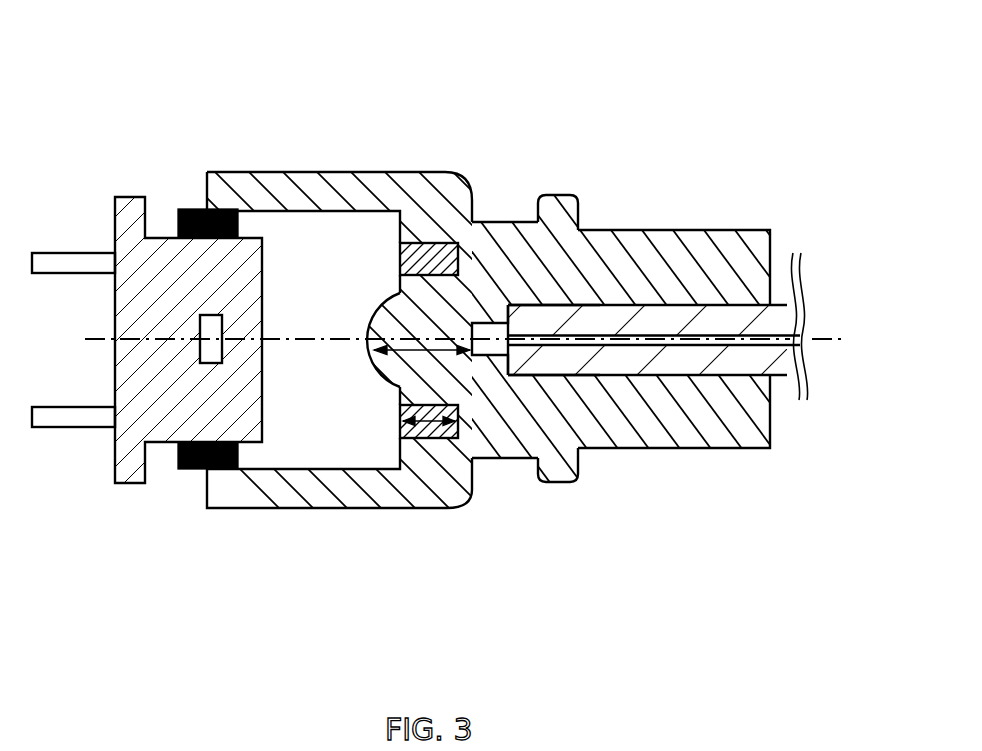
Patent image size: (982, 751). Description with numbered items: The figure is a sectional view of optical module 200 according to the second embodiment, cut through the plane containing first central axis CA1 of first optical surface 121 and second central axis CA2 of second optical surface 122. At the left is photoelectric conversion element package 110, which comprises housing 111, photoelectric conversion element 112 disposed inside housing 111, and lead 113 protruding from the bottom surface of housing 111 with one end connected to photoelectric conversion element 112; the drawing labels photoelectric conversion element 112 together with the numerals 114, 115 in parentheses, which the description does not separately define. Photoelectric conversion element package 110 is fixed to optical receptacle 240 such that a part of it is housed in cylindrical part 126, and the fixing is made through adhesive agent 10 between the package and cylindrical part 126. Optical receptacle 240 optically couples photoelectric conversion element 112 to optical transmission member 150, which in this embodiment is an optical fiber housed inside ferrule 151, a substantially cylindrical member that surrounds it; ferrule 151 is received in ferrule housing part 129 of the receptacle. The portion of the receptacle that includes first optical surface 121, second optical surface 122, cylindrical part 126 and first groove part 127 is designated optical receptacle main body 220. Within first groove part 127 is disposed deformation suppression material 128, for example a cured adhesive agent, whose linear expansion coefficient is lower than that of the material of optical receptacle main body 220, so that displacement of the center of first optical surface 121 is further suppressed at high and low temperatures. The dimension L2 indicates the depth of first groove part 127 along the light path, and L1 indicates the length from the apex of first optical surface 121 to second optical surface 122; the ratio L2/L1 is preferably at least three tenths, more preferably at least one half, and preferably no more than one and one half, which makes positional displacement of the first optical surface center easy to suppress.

The optical module 200 is at (491, 324).
The photoelectric conversion element package 110 is at (177, 324).
The adhesive agent 10 is at (197, 208).
The housing 111 is at (163, 420).
The photoelectric conversion element 112 is at (261, 466).
The light emitting element 114 is at (261, 466).
The light emitting element 115 is at (261, 466).
The lead 113 is at (75, 415).
The cylindrical part 126 is at (310, 187).
The first groove part 127 is at (423, 263).
The deformation suppression material 128 is at (455, 248).
The first optical surface 121 is at (364, 355).
The second optical surface 122 is at (510, 345).
The ferrule housing part 129 is at (578, 358).
The optical receptacle main body 220 is at (486, 319).
The optical receptacle 240 is at (611, 171).
The optical transmission member 150 is at (613, 345).
The ferrule 151 is at (723, 355).
The length from apex of first optical surface to second optical surface L1 is at (463, 357).
The depth of first groove part L2 is at (450, 440).
The first central axis CA1 is at (404, 340).
The second central axis CA2 is at (855, 340).